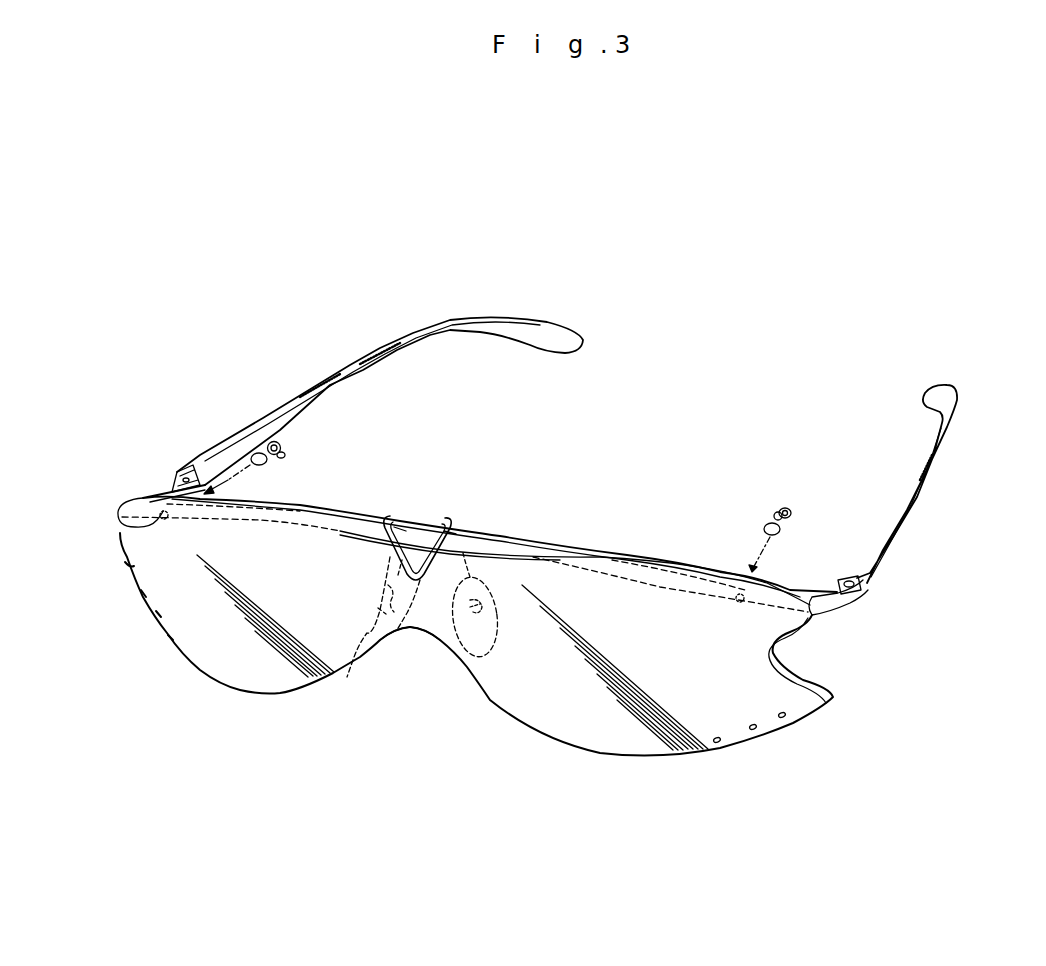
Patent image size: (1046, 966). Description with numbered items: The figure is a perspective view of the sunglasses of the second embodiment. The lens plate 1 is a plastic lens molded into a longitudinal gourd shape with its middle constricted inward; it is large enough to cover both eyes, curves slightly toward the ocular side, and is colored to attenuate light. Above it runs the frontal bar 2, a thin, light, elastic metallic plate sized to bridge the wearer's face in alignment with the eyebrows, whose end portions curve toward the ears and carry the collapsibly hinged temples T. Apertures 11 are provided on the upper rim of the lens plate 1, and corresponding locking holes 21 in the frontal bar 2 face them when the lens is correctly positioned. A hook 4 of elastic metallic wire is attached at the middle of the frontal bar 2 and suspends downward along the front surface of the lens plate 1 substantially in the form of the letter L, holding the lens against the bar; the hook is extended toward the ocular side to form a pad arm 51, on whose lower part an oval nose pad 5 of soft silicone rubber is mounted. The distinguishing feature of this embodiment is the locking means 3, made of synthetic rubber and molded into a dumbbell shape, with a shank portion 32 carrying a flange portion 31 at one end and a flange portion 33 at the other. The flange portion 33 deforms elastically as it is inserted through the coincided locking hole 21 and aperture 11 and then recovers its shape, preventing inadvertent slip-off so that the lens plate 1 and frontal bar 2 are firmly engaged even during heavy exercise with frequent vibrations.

The lens plate 1 is at (574, 745).
The frontal bar 2 is at (537, 530).
The locking means 3 is at (287, 449).
The hook 4 is at (417, 630).
The nose pad 5 is at (353, 660).
The aperture 11 is at (119, 524).
The locking hole 21 is at (152, 486).
The flange portion 31 is at (278, 442).
The shank portion 32 is at (285, 456).
The flange portion 33 is at (268, 465).
The pad arm 51 is at (452, 530).
The temple T is at (262, 417).